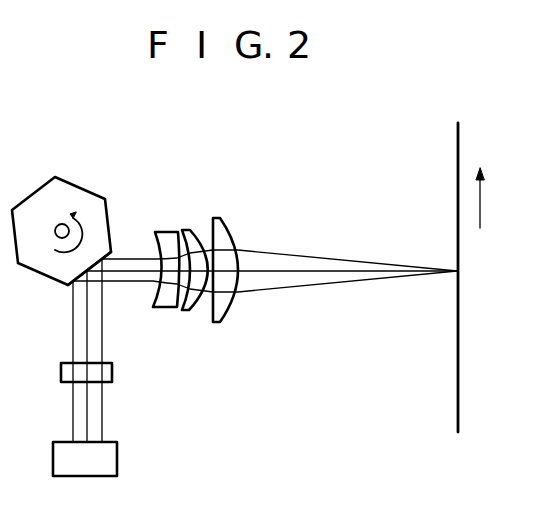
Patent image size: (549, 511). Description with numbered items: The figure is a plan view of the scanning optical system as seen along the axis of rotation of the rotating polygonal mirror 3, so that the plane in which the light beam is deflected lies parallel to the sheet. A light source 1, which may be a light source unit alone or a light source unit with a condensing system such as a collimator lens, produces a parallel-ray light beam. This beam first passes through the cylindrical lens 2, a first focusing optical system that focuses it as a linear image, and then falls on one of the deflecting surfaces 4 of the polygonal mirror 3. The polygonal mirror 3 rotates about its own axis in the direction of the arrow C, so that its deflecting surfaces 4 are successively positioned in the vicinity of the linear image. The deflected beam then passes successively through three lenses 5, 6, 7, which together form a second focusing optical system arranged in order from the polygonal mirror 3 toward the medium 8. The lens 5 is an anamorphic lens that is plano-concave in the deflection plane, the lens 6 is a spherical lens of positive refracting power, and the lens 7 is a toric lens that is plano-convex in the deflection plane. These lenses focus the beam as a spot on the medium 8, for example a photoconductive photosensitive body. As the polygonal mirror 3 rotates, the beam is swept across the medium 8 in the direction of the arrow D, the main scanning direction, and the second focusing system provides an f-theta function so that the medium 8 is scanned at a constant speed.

The light source 1 is at (108, 455).
The cylindrical lens 2 is at (108, 373).
The rotating polygonal mirror 3 is at (78, 197).
The deflecting surface 4 is at (68, 286).
The direction of rotation of the polygonal mirror C is at (79, 237).
The anamorphic lens 5 is at (170, 238).
The spherical lens 6 is at (190, 235).
The toric lens 7 is at (222, 225).
The medium 8 is at (459, 340).
The main scanning direction D is at (481, 210).